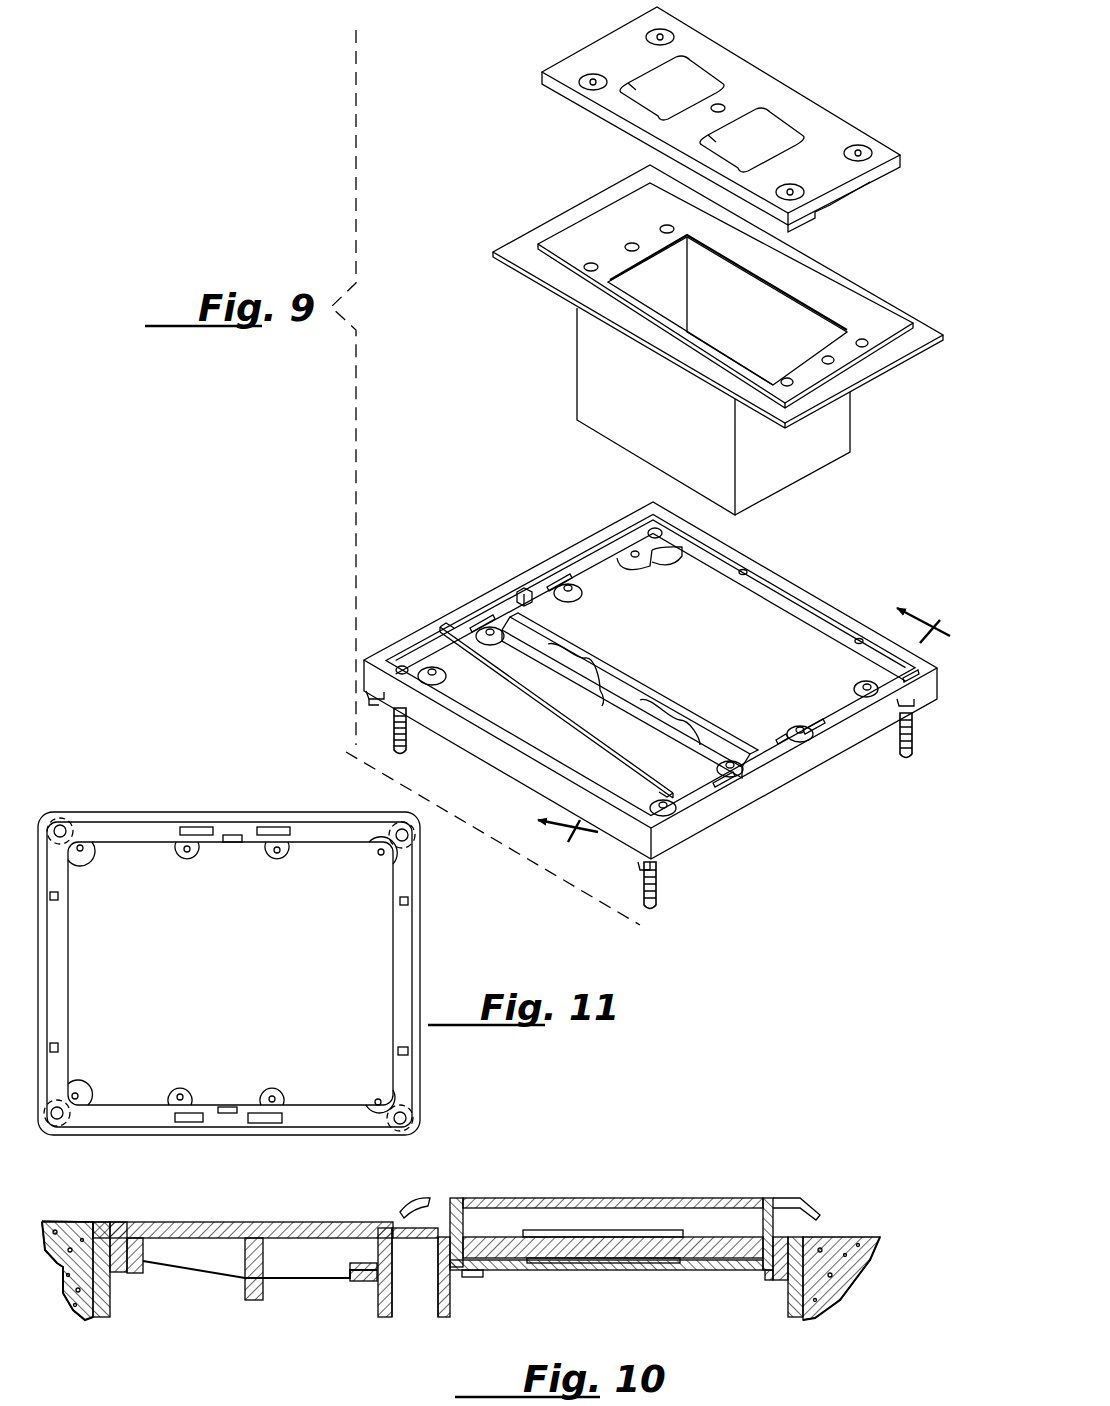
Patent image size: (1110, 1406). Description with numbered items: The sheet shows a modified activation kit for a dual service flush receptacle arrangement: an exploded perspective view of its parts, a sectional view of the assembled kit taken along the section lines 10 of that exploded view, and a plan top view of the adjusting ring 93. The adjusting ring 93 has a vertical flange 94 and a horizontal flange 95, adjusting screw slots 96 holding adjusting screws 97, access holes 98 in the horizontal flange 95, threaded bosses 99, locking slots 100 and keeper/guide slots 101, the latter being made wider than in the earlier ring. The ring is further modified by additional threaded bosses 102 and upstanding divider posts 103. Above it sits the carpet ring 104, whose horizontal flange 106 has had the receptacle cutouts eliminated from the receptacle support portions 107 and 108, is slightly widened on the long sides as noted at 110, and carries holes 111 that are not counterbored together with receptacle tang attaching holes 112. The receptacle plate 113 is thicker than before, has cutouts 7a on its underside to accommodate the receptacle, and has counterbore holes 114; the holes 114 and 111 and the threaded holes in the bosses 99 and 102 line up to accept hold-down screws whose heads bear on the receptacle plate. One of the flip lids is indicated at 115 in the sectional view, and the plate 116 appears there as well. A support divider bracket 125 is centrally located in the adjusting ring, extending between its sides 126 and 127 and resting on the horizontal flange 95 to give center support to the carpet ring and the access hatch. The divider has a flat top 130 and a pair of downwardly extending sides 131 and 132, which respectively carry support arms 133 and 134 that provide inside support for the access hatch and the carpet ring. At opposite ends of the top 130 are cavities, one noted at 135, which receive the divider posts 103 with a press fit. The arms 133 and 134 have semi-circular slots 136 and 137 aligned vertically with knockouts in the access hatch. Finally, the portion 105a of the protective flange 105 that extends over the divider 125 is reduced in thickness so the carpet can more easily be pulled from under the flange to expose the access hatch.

In FIG. 9, the cutouts 7a is at (826, 212).
In FIG. 9, the section lines 10— 10 is at (726, 706).
In FIG. 9, the adjusting ring 93 is at (527, 553).
In FIG. 9, the vertical flange 94 is at (604, 532).
In FIG. 9, the horizontal flange 95 is at (614, 545).
In FIG. 9, the adjusting screw slots 96 is at (380, 703).
In FIG. 10, the adjusting screw slots 96 is at (772, 1282).
In FIG. 9, the adjusting screws 97 is at (408, 737).
In FIG. 9, the access holes 98 is at (401, 665).
In FIG. 11, the access holes 98 is at (63, 826).
In FIG. 9, the threaded bosses 99 is at (645, 560).
In FIG. 11, the threaded bosses 99 is at (90, 851).
In FIG. 9, the locking slots 100 is at (746, 569).
In FIG. 11, the locking slots 100 is at (60, 898).
In FIG. 9, the keeper/guide slots 101 is at (560, 575).
In FIG. 11, the keeper/guide slots 101 is at (198, 827).
In FIG. 9, the additional threaded bosses 102 is at (583, 594).
In FIG. 11, the additional threaded bosses 102 is at (188, 860).
In FIG. 9, the upstanding divider posts 103 is at (518, 590).
In FIG. 11, the upstanding divider posts 103 is at (232, 845).
In FIG. 9, the carpet ring 104 is at (578, 438).
In FIG. 9, the protective flange 105 is at (530, 268).
In FIG. 10, the protective flange 105 is at (437, 1208).
In FIG. 10, the reduced-thickness portion of protective flange 105a is at (400, 1212).
In FIG. 9, the horizontal flange 106 is at (575, 258).
In FIG. 9, the receptacle support portion 107 is at (598, 237).
In FIG. 9, the receptacle support portion 108 is at (860, 330).
In FIG. 9, the increased flange width 110 is at (835, 305).
In FIG. 9, the holes 111 is at (667, 235).
In FIG. 9, the receptacle tang attaching holes 112 is at (628, 241).
In FIG. 9, the receptacle plate 113 is at (742, 80).
In FIG. 9, the counterbore holes 114 is at (648, 40).
In FIG. 10, the flip lid 115 is at (697, 1197).
In FIG. 10, the frame top plate 116 is at (313, 1218).
In FIG. 9, the support divider bracket 125 is at (714, 690).
In FIG. 10, the support divider bracket 125 is at (418, 1294).
In FIG. 9, the side of adjusting ring 126 is at (478, 648).
In FIG. 9, the side of adjusting ring 127 is at (673, 793).
In FIG. 9, the flat top 130 is at (657, 665).
In FIG. 10, the flat top 130 is at (428, 1226).
In FIG. 9, the downwardly extending side 131 is at (614, 658).
In FIG. 10, the downwardly extending side 131 is at (380, 1308).
In FIG. 10, the downwardly extending side 132 is at (450, 1310).
In FIG. 9, the support arm 133 is at (553, 650).
In FIG. 10, the support arm 133 is at (345, 1278).
In FIG. 10, the support arm 134 is at (480, 1278).
In FIG. 9, the cavity 135 is at (781, 736).
In FIG. 9, the semi-circular slot 136 is at (598, 678).
In FIG. 9, the semi-circular slot 137 is at (655, 710).